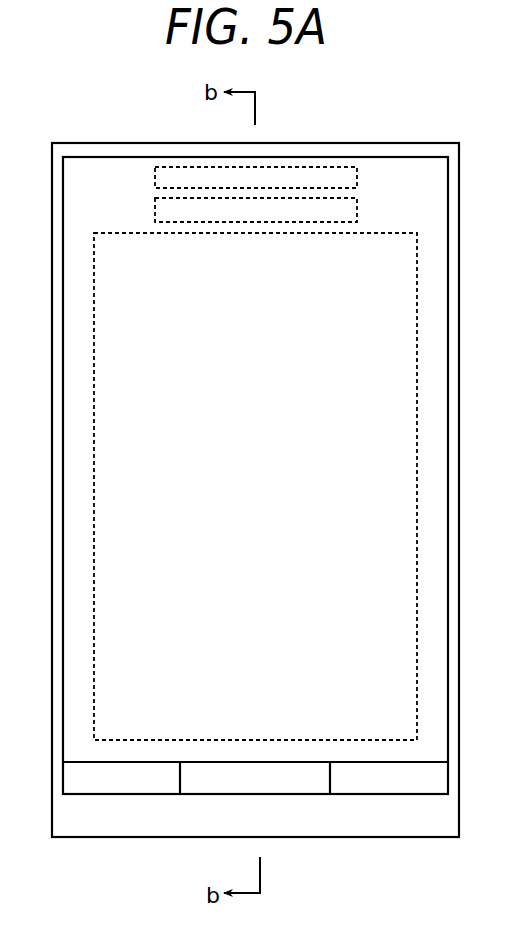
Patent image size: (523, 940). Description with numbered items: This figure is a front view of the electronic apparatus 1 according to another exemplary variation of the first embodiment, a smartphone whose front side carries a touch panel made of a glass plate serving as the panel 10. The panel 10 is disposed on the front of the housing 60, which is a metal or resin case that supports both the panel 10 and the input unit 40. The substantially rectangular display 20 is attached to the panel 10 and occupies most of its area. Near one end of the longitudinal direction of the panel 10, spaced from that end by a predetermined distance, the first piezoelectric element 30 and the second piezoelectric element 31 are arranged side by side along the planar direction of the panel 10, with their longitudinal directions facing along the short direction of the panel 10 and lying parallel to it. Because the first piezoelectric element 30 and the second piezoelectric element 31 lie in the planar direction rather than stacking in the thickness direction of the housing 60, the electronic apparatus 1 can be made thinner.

The electronic apparatus 1 is at (117, 130).
The panel 10 is at (372, 157).
The display 20 is at (373, 233).
The first piezoelectric element 30 is at (155, 178).
The second piezoelectric element 31 is at (155, 211).
The input unit 40 is at (75, 785).
The housing 60 is at (291, 143).